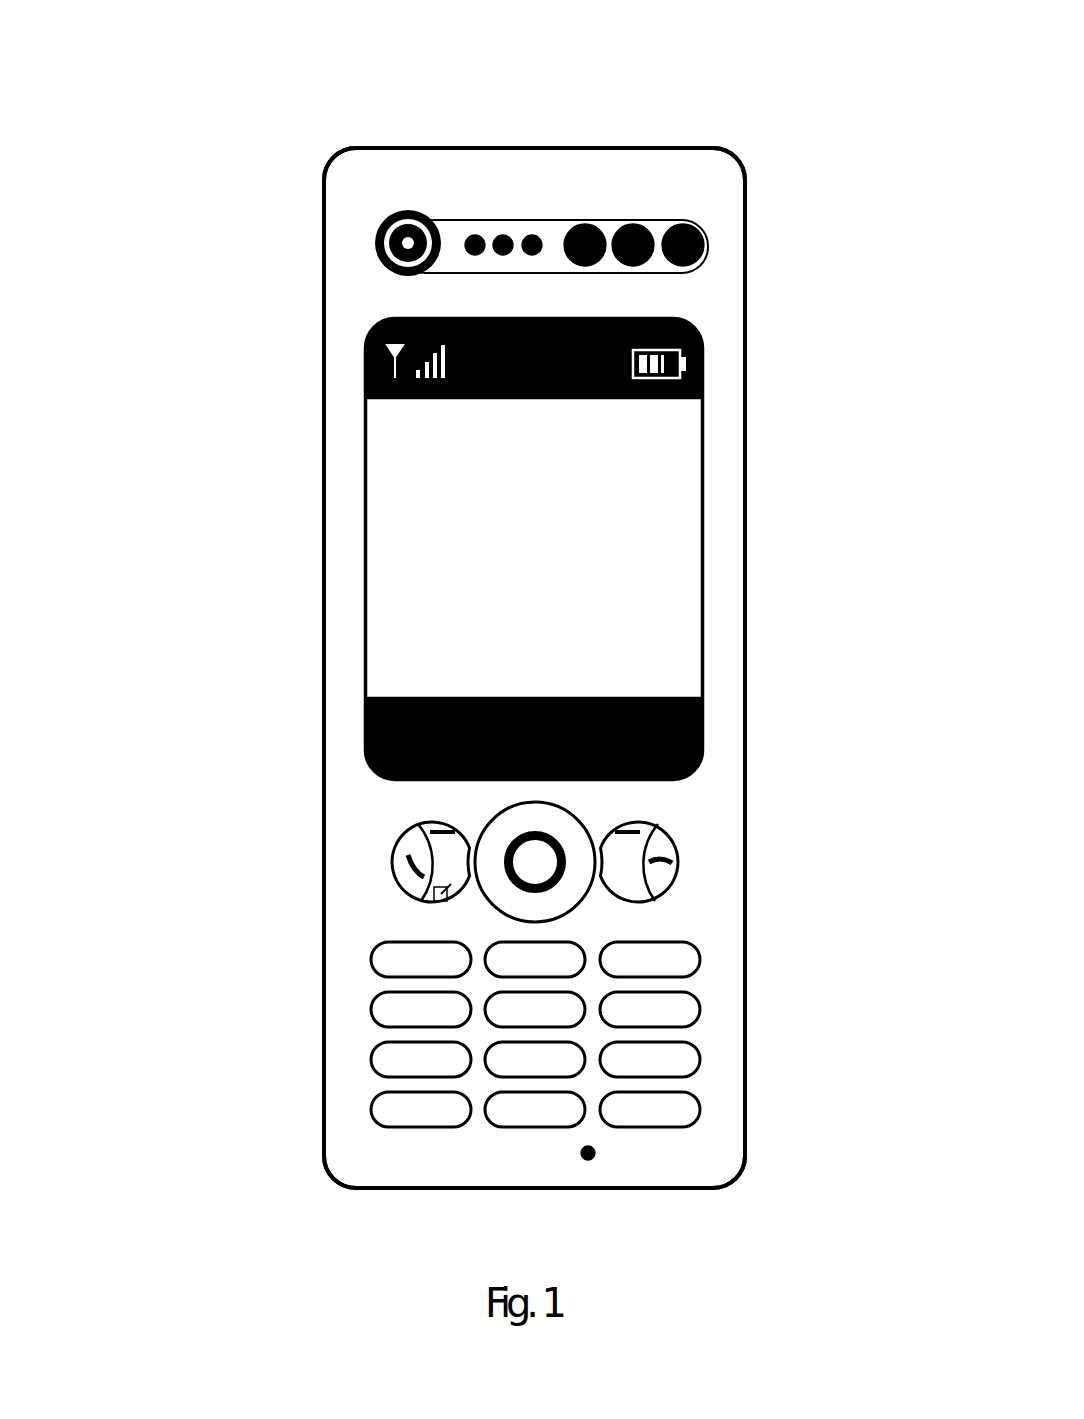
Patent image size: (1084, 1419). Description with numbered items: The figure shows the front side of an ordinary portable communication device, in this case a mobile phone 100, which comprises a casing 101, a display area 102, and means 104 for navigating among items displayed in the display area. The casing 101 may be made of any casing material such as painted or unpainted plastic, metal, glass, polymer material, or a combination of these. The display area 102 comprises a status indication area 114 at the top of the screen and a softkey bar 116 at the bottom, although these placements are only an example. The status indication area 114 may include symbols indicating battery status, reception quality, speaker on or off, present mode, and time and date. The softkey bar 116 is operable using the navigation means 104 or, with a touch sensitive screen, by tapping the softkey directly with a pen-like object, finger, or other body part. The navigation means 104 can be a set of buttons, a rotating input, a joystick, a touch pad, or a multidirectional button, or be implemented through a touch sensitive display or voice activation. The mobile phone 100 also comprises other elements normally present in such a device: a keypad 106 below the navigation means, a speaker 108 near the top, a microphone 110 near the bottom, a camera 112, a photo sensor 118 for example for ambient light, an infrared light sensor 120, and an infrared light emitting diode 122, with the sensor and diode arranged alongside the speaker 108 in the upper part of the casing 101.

The mobile phone 100 is at (560, 120).
The casing 101 is at (321, 500).
The display area 102 is at (640, 573).
The means for navigating 104 is at (583, 807).
The keypad 106 is at (492, 1043).
The speaker 108 is at (505, 236).
The microphone 110 is at (596, 1152).
The camera 112 is at (385, 215).
The status indication area 114 is at (377, 330).
The softkey bar 116 is at (367, 712).
The photo sensor 118 is at (583, 223).
The infrared light sensor 120 is at (637, 223).
The infrared light emitting diode 122 is at (703, 233).